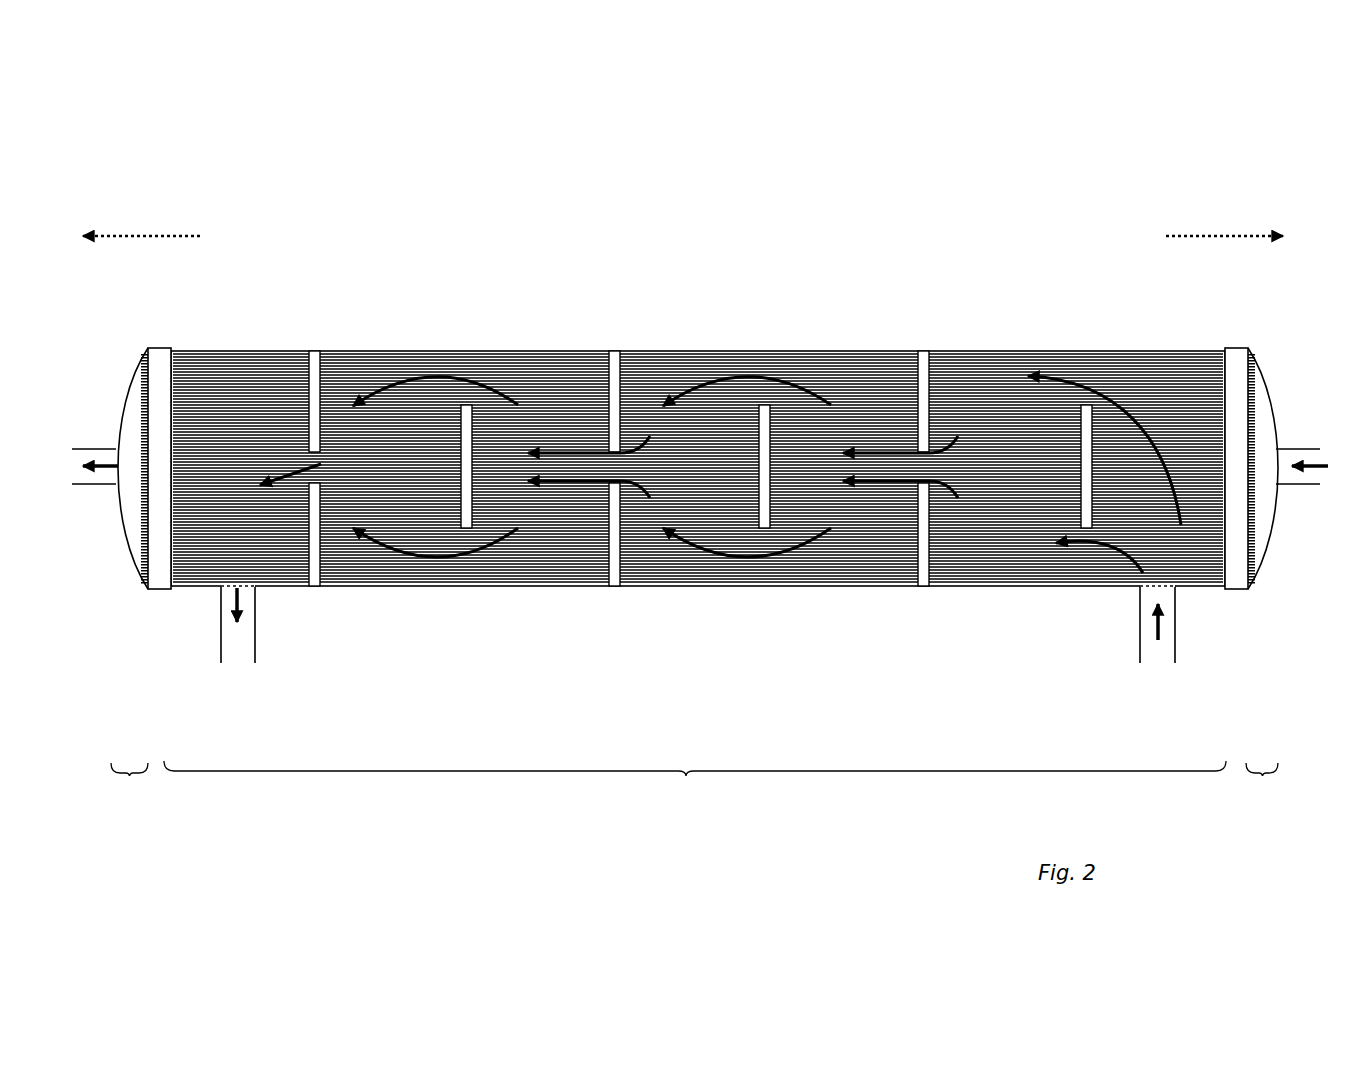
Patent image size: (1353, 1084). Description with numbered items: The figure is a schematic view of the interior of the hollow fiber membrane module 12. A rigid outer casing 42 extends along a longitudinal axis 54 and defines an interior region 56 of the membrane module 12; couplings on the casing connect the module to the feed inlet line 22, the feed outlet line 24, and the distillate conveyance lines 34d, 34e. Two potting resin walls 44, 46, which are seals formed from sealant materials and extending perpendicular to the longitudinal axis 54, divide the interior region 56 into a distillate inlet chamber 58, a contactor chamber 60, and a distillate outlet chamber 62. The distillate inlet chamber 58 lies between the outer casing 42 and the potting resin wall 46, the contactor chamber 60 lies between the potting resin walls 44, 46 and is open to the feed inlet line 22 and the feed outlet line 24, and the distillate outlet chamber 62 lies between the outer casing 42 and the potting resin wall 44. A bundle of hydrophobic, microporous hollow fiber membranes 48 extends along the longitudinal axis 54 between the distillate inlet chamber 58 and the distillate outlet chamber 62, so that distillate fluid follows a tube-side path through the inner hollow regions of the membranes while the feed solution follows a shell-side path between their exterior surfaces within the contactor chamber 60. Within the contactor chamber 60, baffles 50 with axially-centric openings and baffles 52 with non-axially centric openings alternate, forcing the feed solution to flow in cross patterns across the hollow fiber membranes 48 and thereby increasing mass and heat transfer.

The membrane module 12 is at (908, 185).
The feed inlet line 22 is at (1168, 622).
The feed outlet line 24 is at (213, 640).
The distillate conveyance line 34d is at (1287, 441).
The distillate conveyance line 34e is at (90, 477).
The outer casing 42 is at (1008, 343).
The potting resin wall 44 is at (150, 581).
The potting resin wall 46 is at (1230, 581).
The hollow fiber membranes 48 is at (887, 367).
The baffles 50 is at (309, 580).
The baffles 52 is at (458, 522).
The longitudinal axis 54 is at (150, 228).
The interior region 56 is at (565, 340).
The distillate inlet chamber 58 is at (1263, 576).
The contactor chamber 60 is at (695, 785).
The distillate outlet chamber 62 is at (129, 579).